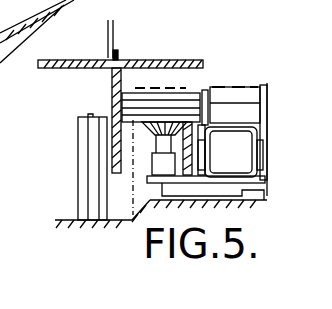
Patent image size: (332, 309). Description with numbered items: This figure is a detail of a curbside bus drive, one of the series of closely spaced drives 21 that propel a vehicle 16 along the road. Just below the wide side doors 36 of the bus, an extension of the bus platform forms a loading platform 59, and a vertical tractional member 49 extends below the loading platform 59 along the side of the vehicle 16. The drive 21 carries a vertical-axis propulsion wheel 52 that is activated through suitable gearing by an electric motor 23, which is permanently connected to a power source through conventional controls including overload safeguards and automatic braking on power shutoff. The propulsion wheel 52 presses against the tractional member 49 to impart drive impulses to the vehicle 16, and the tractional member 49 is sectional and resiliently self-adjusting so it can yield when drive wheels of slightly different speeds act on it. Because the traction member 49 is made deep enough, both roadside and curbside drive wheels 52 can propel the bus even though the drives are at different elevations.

The vehicle 16 is at (60, 72).
The drive 21 is at (129, 31).
The electric motor 23 is at (240, 160).
The side door 36 is at (114, 32).
The tractional member 49 is at (112, 88).
The propulsion wheel 52 is at (181, 105).
The loading platform 59 is at (169, 60).